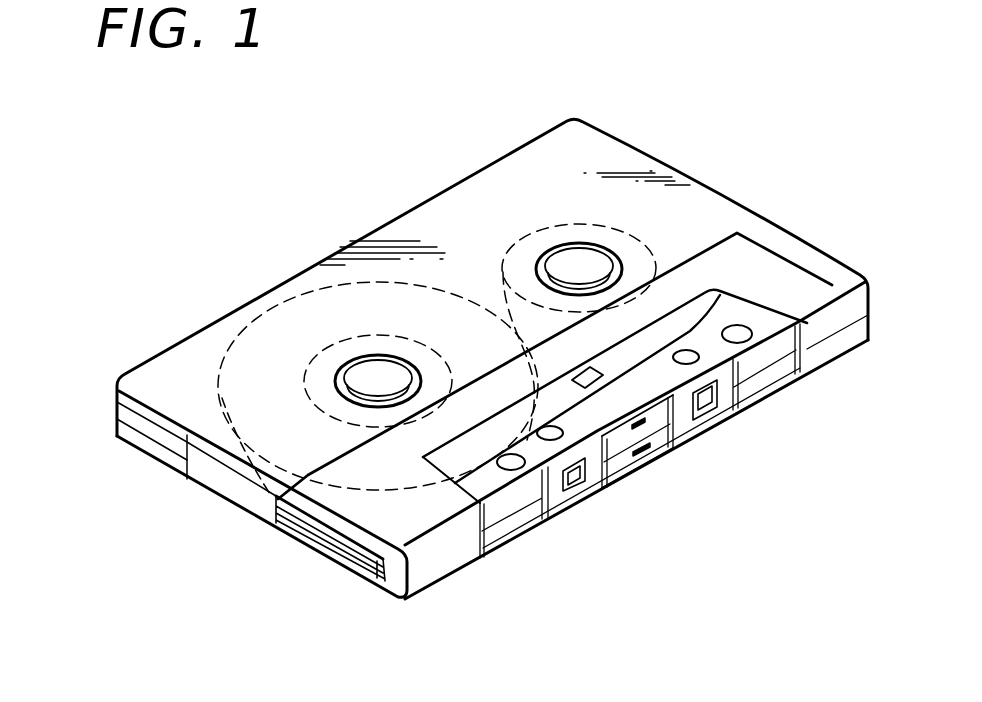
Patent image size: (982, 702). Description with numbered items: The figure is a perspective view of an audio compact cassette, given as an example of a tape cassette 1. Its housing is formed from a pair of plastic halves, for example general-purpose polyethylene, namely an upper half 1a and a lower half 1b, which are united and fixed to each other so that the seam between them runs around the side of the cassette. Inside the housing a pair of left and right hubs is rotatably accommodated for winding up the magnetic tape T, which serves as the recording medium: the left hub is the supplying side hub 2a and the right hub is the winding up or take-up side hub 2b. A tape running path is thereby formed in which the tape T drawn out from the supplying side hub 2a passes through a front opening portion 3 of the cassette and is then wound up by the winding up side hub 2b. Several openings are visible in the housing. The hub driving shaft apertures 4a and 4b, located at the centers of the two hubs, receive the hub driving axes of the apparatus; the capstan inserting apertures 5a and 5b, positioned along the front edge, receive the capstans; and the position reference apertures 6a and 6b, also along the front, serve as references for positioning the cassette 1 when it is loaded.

The tape cassette 1 is at (657, 161).
The upper half 1a is at (113, 392).
The lower half 1b is at (115, 429).
The supplying side hub 2a is at (306, 400).
The winding up side hub 2b is at (615, 227).
The front opening portion 3 is at (660, 448).
The hub driving shaft aperture 4a is at (350, 398).
The hub driving shaft aperture 4b is at (589, 294).
The capstan inserting aperture 5a is at (510, 468).
The capstan inserting aperture 5b is at (740, 338).
The position reference aperture 6a is at (550, 439).
The position reference aperture 6b is at (697, 361).
The tape T is at (617, 453).